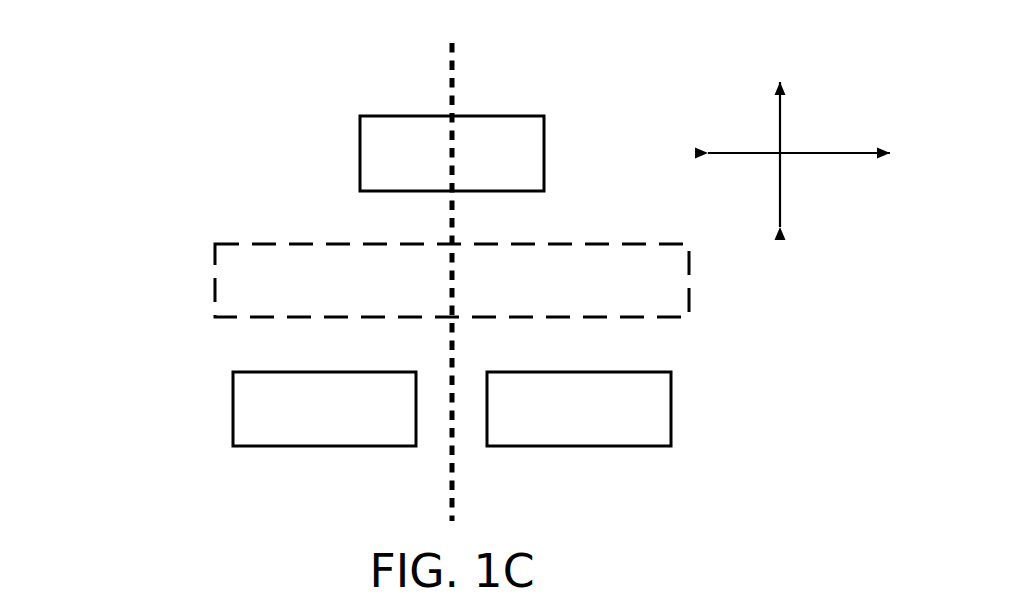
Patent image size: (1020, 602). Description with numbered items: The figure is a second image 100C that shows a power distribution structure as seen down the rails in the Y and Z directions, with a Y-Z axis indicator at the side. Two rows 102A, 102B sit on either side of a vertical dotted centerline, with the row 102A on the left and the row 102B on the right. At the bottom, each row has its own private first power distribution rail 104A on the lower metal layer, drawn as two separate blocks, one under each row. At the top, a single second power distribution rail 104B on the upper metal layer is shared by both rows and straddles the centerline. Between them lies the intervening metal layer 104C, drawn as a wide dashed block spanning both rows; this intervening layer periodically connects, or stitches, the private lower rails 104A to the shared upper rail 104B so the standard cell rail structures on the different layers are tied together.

The second image 100C is at (148, 35).
The row 102A is at (292, 71).
The row 102B is at (658, 70).
The first power distribution rail 104A is at (160, 408).
The second power distribution rail 104B is at (160, 153).
The intervening metal layer 104C is at (160, 282).